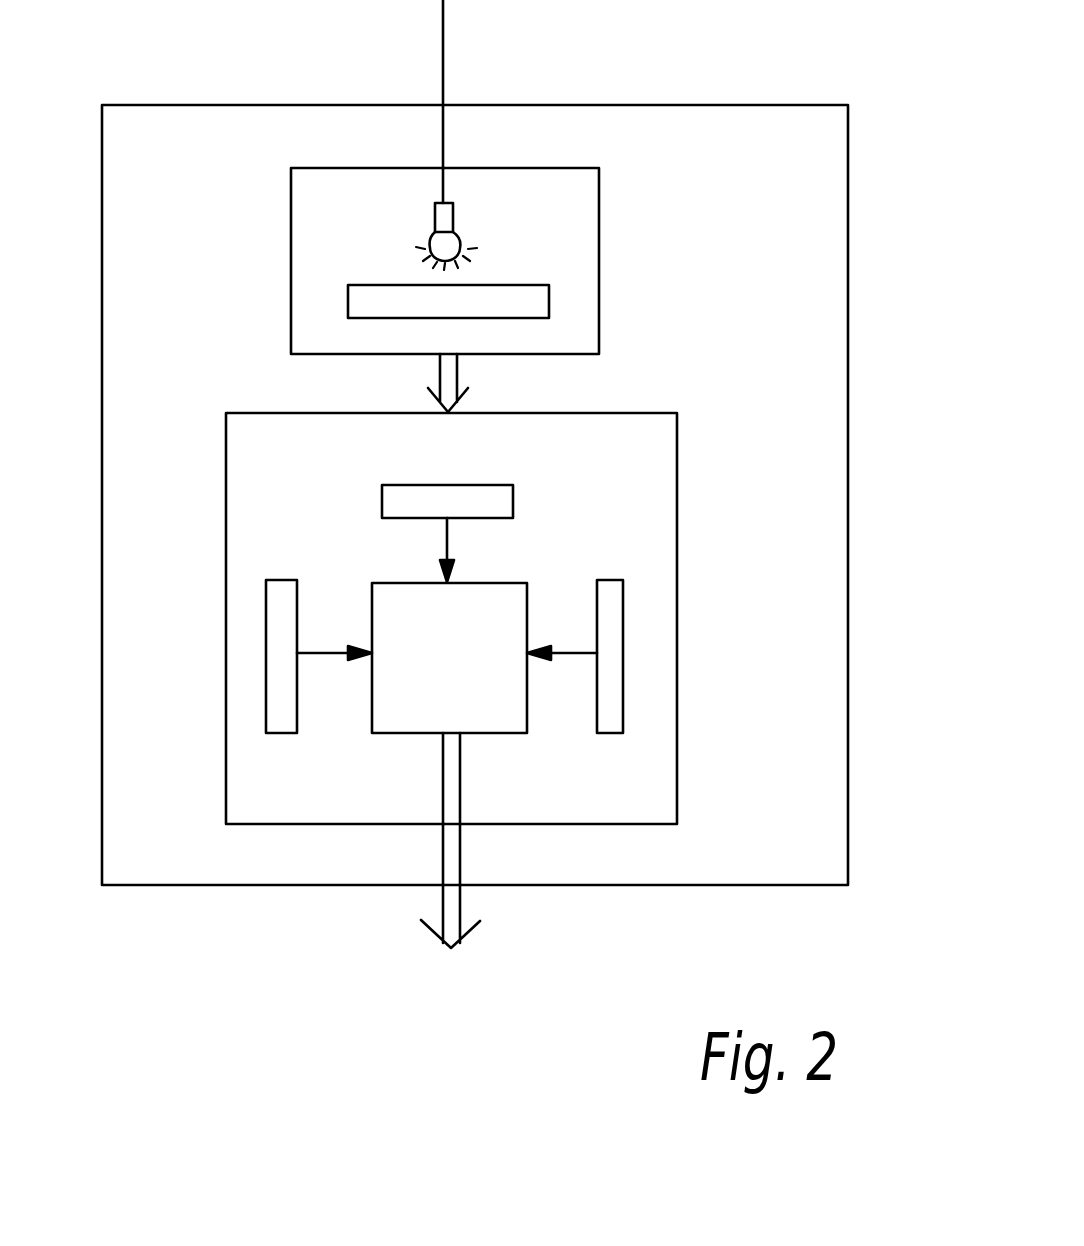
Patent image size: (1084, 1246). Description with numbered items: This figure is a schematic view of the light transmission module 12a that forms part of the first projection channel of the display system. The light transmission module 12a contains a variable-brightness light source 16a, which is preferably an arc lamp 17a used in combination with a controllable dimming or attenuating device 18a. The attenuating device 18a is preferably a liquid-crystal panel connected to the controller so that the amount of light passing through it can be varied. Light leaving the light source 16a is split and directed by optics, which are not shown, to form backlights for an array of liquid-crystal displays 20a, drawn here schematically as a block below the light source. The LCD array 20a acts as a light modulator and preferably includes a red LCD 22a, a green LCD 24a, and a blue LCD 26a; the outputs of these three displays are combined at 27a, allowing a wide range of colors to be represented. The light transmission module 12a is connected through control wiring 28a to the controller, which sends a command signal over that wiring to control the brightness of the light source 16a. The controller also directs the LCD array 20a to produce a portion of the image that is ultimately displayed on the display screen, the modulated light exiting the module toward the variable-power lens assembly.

The light transmission module 12a is at (848, 437).
The variable-brightness light source 16a is at (599, 193).
The arc lamp 17a is at (436, 210).
The controllable dimming or attenuating device 18a is at (348, 302).
The array of liquid-crystal displays 20a is at (677, 615).
The red LCD 22a is at (275, 578).
The green LCD 24a is at (385, 490).
The blue LCD 26a is at (605, 580).
The output combining point 27a is at (512, 703).
The control wiring 28a is at (443, 42).